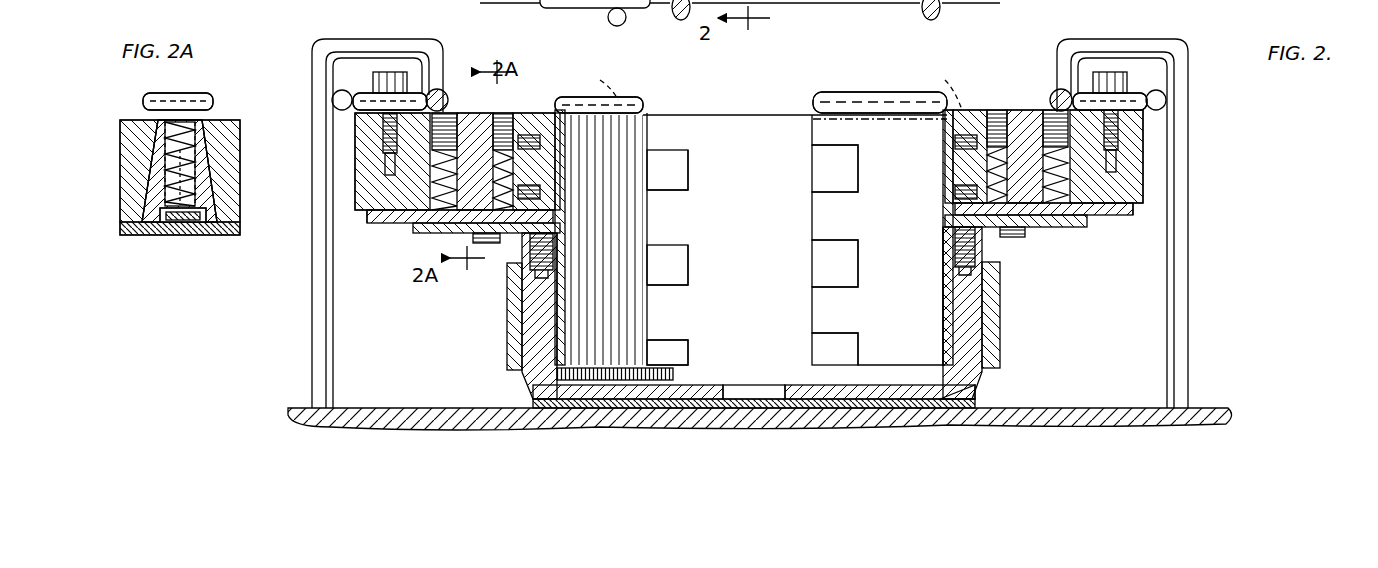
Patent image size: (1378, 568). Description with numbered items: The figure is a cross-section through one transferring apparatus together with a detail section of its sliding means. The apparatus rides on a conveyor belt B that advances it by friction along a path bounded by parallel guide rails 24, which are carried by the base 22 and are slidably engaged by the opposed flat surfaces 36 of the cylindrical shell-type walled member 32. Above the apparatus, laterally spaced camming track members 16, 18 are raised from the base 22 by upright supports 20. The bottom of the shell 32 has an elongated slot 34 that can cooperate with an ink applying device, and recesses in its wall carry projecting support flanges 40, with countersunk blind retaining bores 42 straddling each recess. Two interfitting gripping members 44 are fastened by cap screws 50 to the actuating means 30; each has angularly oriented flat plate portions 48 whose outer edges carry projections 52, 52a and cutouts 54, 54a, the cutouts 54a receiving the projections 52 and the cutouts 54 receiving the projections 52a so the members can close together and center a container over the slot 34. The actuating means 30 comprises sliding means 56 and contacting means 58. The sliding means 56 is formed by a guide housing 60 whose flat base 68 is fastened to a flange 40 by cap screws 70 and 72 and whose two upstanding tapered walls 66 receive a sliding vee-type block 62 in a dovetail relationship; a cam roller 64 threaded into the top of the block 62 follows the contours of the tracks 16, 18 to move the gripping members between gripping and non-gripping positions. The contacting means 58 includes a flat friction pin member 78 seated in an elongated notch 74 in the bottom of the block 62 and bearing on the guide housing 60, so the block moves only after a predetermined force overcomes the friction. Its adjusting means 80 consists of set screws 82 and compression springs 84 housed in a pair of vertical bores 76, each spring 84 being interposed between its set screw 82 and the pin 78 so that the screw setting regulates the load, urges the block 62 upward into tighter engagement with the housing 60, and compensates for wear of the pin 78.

In FIG. 2, the camming track member 16 is at (444, 75).
In FIG. 2, the camming track member 18 is at (342, 111).
In FIG. 2, the upright support 20 is at (334, 330).
In FIG. 2, the base 22 is at (1212, 406).
In FIG. 2, the guide rail 24 is at (507, 314).
In FIG. 2A, the actuating means 30 is at (245, 118).
In FIG. 2, the actuating means 30 is at (352, 190).
In FIG. 2, the walled member 32 is at (520, 376).
In FIG. 2, the elongated slot 34 is at (735, 385).
In FIG. 2, the flat surface 36 is at (507, 285).
In FIG. 2, the support flange 40 is at (470, 236).
In FIG. 2, the retaining bore 42 is at (769, 82).
In FIG. 2, the gripping member 44 is at (607, 107).
In FIG. 2, the flat plate portion 48 is at (645, 108).
In FIG. 2, the cap screw 50 is at (565, 162).
In FIG. 2, the projection 52 is at (690, 165).
In FIG. 2, the projection 52a is at (812, 130).
In FIG. 2, the cutout 54 is at (651, 156).
In FIG. 2, the cutout 54a is at (845, 168).
In FIG. 2A, the sliding means 56 is at (200, 174).
In FIG. 2, the sliding means 56 is at (1107, 195).
In FIG. 2, the contacting means 58 is at (430, 197).
In FIG. 2A, the guide housing 60 is at (122, 144).
In FIG. 2A, the sliding vee-type block 62 is at (155, 182).
In FIG. 2, the sliding vee-type block 62 is at (360, 212).
In FIG. 2A, the cam roller 64 is at (184, 95).
In FIG. 2, the cam roller 64 is at (375, 95).
In FIG. 2A, the tapered wall 66 is at (155, 130).
In FIG. 2A, the flat base 68 is at (208, 224).
In FIG. 2, the flat base 68 is at (412, 224).
In FIG. 2, the cap screw 70 is at (492, 244).
In FIG. 2, the cap screw 72 is at (555, 250).
In FIG. 2A, the elongated notch 74 is at (212, 206).
In FIG. 2, the elongated notch 74 is at (470, 215).
In FIG. 2A, the bore 76 is at (205, 125).
In FIG. 2, the bore 76 is at (457, 168).
In FIG. 2A, the friction pin member 78 is at (180, 229).
In FIG. 2, the friction pin member 78 is at (372, 225).
In FIG. 2, the adjusting means 80 is at (566, 108).
In FIG. 2, the set screw 82 is at (456, 112).
In FIG. 2, the compression spring 84 is at (398, 148).
In FIG. 2, the conveyor belt B is at (985, 388).